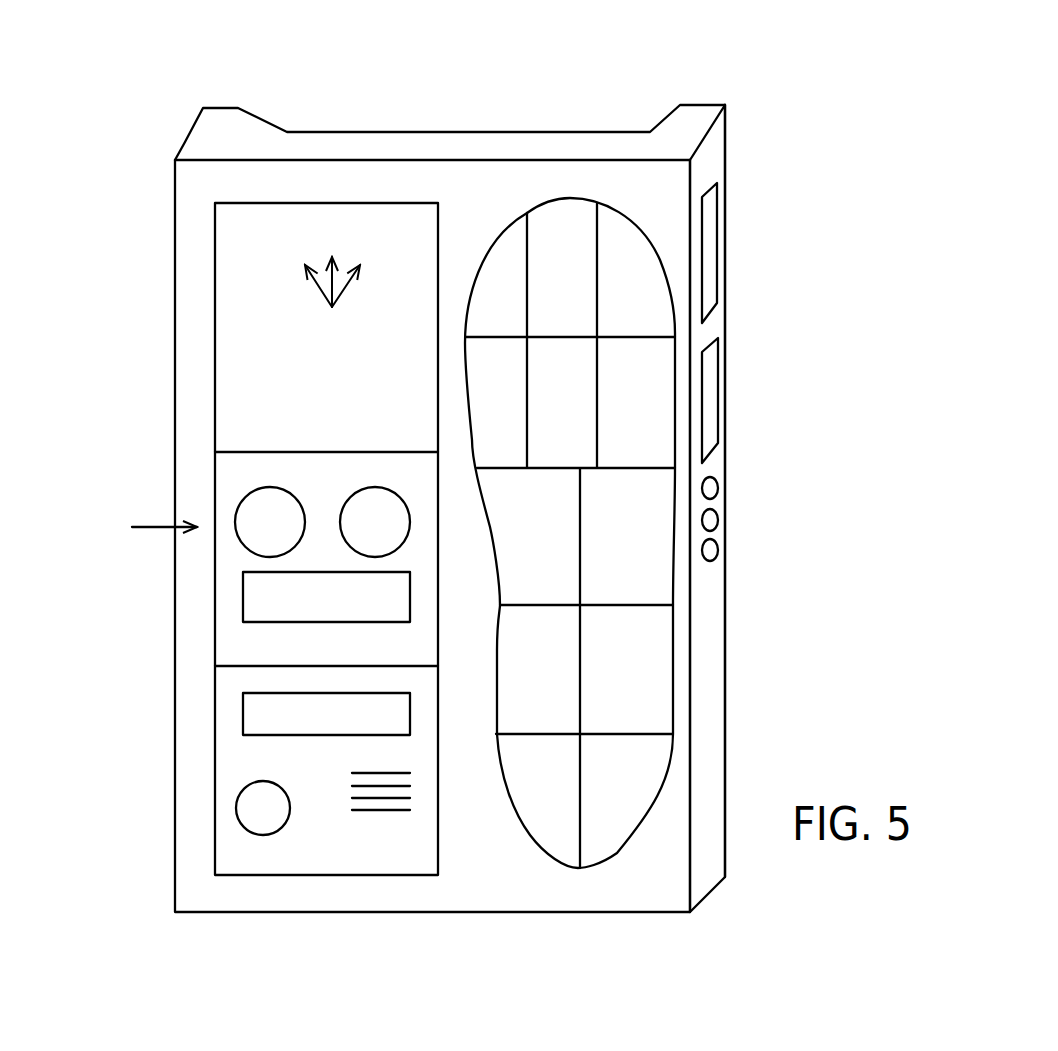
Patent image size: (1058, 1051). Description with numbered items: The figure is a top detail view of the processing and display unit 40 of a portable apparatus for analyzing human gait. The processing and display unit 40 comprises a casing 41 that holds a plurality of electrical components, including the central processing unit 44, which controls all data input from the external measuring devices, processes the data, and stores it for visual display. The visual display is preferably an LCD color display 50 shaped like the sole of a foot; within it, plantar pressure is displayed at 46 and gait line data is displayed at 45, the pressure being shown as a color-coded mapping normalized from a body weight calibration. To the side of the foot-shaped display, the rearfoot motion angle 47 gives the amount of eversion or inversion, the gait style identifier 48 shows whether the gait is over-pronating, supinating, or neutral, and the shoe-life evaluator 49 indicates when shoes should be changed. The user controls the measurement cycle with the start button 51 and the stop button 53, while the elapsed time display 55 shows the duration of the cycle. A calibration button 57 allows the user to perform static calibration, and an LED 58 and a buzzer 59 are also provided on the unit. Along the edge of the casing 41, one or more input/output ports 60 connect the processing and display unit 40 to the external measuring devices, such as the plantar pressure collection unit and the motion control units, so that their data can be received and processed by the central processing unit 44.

The processing and display unit 40 is at (423, 118).
The casing 41 is at (212, 147).
The central processing unit 44 is at (705, 708).
The gait line data display 45 is at (197, 330).
The plantar pressure display 46 is at (562, 245).
The rearfoot motion angle 47 is at (227, 290).
The gait style identifier 48 is at (263, 370).
The shoe-life evaluator 49 is at (237, 437).
The LCD color display 50 is at (227, 247).
The start button 51 is at (255, 525).
The stop button 53 is at (382, 522).
The elapsed time display 55 is at (298, 598).
The calibration button 57 is at (273, 712).
The LED 58 is at (258, 810).
The buzzer 59 is at (373, 817).
The input/output ports 60 is at (740, 490).